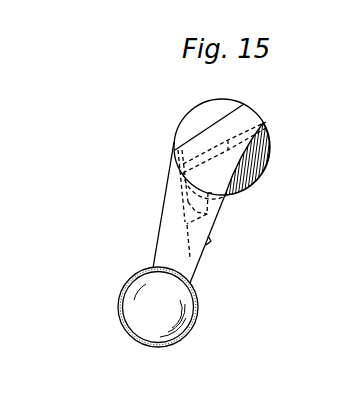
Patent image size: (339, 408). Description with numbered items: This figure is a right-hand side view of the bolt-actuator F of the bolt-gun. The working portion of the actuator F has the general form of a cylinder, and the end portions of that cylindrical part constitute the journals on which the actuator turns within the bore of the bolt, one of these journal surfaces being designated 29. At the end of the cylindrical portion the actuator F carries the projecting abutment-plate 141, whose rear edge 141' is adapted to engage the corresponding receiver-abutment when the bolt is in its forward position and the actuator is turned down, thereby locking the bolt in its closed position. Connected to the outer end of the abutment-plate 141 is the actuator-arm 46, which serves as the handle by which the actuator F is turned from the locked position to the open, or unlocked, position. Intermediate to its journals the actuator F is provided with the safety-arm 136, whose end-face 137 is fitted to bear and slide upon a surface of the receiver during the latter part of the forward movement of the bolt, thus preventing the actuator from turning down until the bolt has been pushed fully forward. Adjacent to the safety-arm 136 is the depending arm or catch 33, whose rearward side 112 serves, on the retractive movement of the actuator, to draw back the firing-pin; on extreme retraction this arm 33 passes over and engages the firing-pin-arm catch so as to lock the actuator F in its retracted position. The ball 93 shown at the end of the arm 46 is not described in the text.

The journal surface 29 is at (188, 121).
The abutment-plate 141 is at (241, 147).
The rear edge of abutment-plate 141' is at (194, 160).
The rearward side of depending arm 112 is at (186, 193).
The catch 33 is at (178, 218).
The actuator-arm 46 is at (162, 248).
The ball 93 is at (132, 310).
The safety-arm 136 is at (210, 239).
The end-face of safety-arm 137 is at (205, 250).
The bolt-actuator F is at (262, 165).